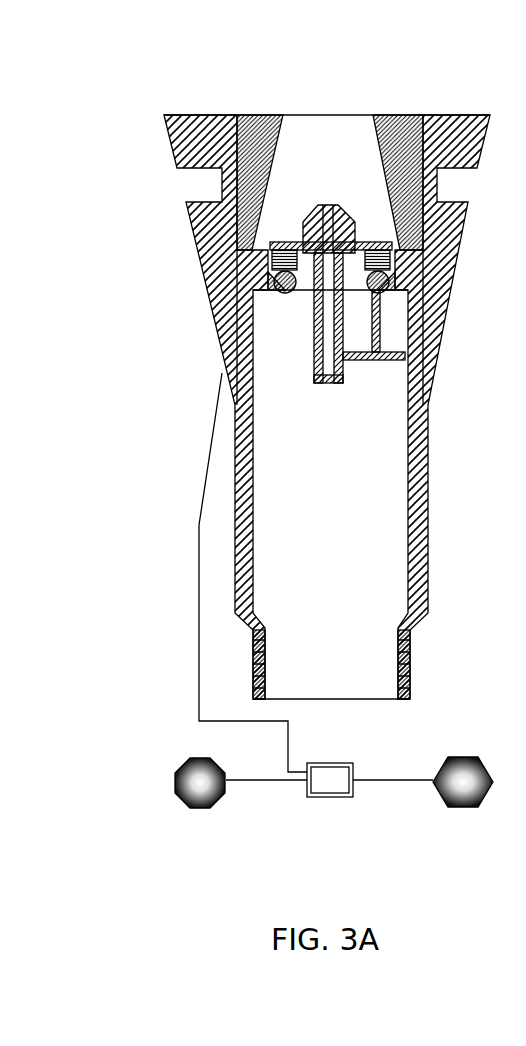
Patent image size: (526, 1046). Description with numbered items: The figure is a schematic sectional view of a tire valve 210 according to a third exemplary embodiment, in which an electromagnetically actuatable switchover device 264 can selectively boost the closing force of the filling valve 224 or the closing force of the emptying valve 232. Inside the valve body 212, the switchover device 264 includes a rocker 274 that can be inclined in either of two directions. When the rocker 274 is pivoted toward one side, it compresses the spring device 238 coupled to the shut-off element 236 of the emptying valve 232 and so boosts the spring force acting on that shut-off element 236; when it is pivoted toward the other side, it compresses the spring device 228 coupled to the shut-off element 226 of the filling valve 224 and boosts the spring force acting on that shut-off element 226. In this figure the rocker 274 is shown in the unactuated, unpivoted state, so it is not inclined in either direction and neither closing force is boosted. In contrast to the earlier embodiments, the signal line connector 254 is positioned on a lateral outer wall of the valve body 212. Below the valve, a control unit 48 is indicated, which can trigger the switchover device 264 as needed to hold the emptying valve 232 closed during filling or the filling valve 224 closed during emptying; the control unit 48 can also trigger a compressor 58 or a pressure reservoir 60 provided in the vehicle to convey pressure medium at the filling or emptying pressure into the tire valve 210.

The tire valve 210 is at (128, 100).
The valve body 212 is at (430, 452).
The filling valve 224 is at (235, 262).
The shut-off element 226 is at (284, 294).
The spring device 228 is at (272, 262).
The emptying valve 232 is at (445, 268).
The shut-off element 236 is at (392, 292).
The spring device 238 is at (400, 268).
The signal line connector 254 is at (222, 373).
The electromagnetically actuatable switchover device 264 is at (324, 188).
The rocker 274 is at (372, 242).
The control unit 48 is at (345, 763).
The compressor 58 is at (218, 798).
The pressure reservoir 60 is at (482, 800).